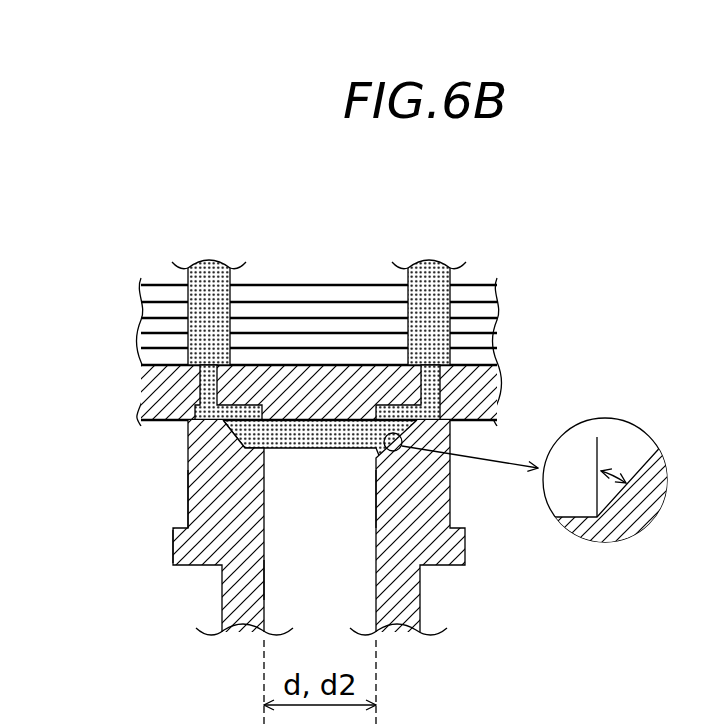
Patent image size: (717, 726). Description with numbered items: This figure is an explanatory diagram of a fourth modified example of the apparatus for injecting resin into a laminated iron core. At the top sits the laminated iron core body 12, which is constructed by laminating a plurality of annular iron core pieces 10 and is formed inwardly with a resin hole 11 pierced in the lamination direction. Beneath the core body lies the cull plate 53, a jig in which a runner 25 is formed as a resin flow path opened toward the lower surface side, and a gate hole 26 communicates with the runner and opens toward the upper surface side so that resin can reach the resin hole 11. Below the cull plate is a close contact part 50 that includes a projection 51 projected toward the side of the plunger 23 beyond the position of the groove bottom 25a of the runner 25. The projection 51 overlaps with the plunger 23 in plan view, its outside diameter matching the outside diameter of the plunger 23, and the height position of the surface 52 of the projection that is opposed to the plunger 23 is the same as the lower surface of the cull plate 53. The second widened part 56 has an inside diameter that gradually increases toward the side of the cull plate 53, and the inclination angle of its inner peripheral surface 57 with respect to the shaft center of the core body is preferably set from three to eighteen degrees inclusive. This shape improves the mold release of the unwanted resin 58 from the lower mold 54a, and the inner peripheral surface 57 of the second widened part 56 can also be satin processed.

The annular iron core pieces 10 is at (290, 331).
The resin hole 11 is at (210, 257).
The laminated iron core body 12 is at (347, 230).
The plunger 23 is at (300, 583).
The runner 25 is at (143, 317).
The groove bottom of the runner 25a is at (178, 447).
The gate hole 26 is at (150, 368).
The close contact part 50 is at (322, 448).
The projection 51 is at (443, 404).
The surface opposed to the plunger 52 is at (364, 447).
The cull plate 53 is at (139, 392).
The lower mold 54a is at (182, 590).
The second widened part 56 is at (233, 442).
The inner peripheral surface 57 is at (652, 440).
The unwanted resin 58 is at (302, 451).